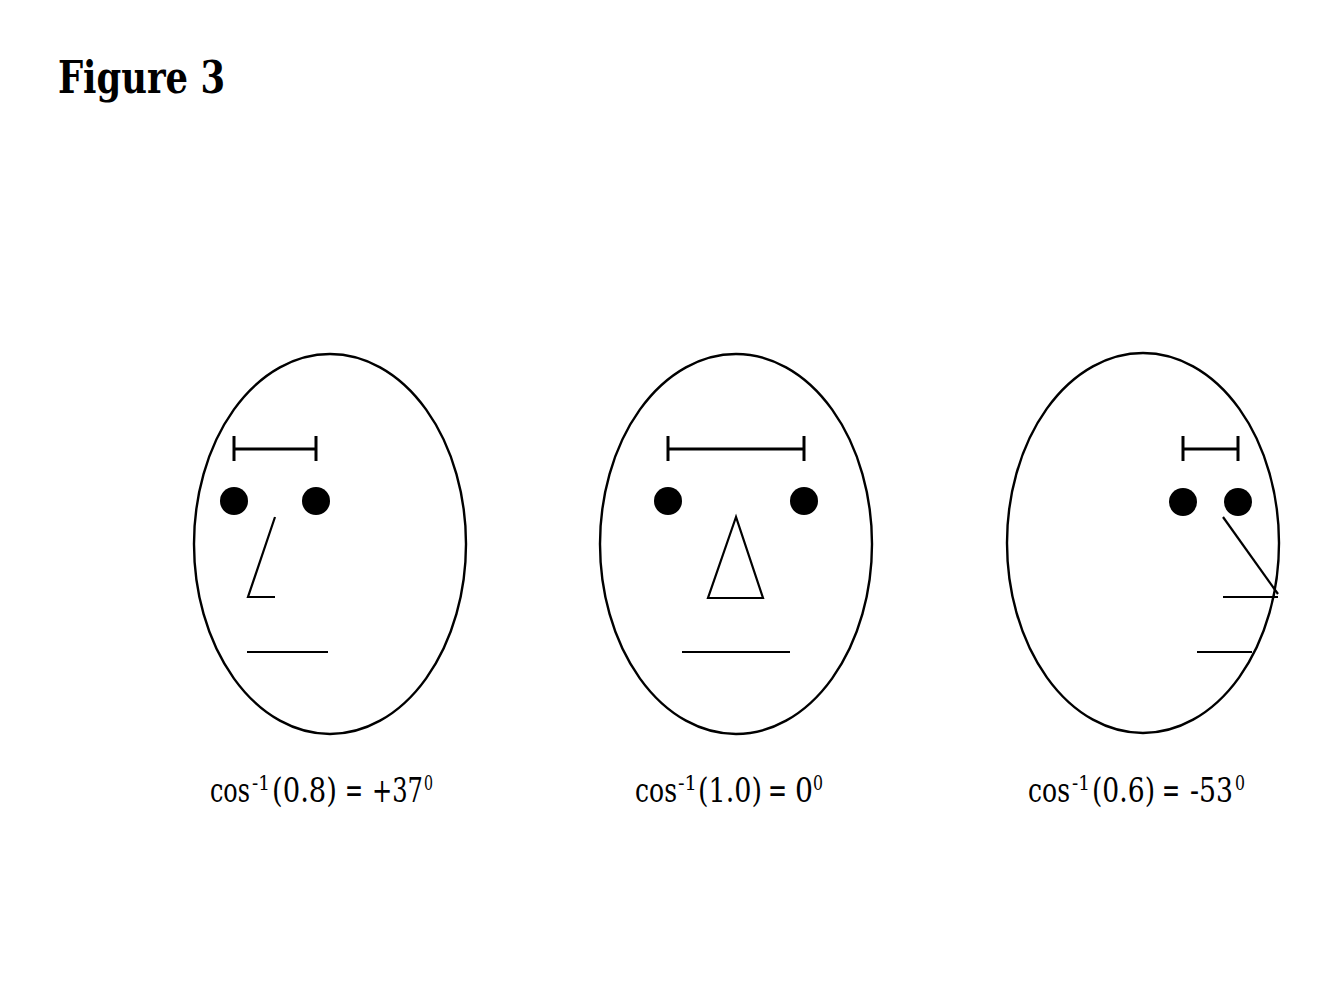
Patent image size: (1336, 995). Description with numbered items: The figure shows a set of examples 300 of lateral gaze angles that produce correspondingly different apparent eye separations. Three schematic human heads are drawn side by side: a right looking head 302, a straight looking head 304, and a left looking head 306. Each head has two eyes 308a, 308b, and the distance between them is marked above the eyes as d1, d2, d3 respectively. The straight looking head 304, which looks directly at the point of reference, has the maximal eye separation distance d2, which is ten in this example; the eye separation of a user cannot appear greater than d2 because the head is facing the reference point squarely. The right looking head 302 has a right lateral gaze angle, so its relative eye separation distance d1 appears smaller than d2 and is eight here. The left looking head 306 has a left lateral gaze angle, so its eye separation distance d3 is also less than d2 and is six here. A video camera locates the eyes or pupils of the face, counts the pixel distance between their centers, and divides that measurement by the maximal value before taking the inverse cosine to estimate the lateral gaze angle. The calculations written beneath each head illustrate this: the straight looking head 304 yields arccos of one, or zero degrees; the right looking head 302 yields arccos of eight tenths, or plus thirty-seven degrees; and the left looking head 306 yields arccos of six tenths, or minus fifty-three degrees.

The set of face images at different pan angles 300 is at (1085, 122).
The right looking head 302 is at (255, 384).
The straight looking head 304 is at (667, 382).
The left looking head 306 is at (1068, 382).
The eye 308a is at (208, 497).
The eye 308b is at (325, 479).
The relative eye separation distance d1 is at (253, 440).
The maximal eye separation distance d2 is at (767, 453).
The eye separation distance d3 is at (1213, 451).